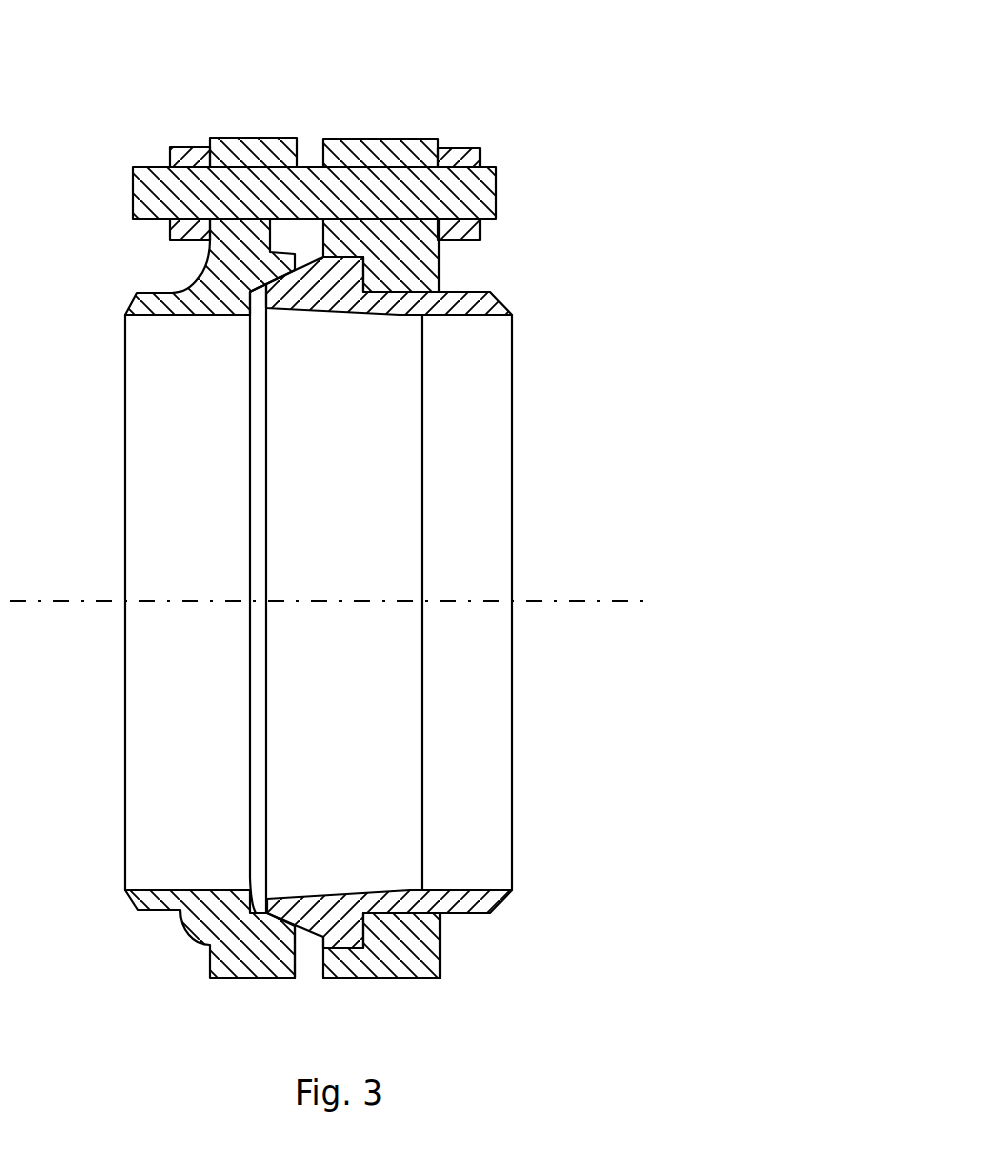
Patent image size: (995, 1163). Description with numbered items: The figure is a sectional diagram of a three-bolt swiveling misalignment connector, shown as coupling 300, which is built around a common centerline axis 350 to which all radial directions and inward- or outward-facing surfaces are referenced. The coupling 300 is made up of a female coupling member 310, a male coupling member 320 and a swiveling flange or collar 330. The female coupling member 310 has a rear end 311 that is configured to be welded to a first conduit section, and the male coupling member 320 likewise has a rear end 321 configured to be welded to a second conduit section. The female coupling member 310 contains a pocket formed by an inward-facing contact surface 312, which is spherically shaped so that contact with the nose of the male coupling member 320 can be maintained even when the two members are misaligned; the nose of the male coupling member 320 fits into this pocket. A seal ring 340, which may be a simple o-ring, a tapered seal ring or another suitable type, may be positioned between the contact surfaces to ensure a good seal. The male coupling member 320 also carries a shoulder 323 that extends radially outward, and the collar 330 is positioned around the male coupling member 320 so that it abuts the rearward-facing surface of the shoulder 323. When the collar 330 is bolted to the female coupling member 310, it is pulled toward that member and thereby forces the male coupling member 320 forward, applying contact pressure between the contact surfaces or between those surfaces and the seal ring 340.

The coupling 300 is at (517, 74).
The female coupling member 310 is at (148, 288).
The rear end 311 is at (130, 898).
The inward-facing contact surface 312 is at (258, 903).
The male coupling member 320 is at (483, 290).
The rear end 321 is at (505, 902).
The shoulder 323 is at (383, 980).
The swiveling flange or collar 330 is at (442, 952).
The seal ring 340 is at (312, 937).
The axis 350 is at (610, 600).